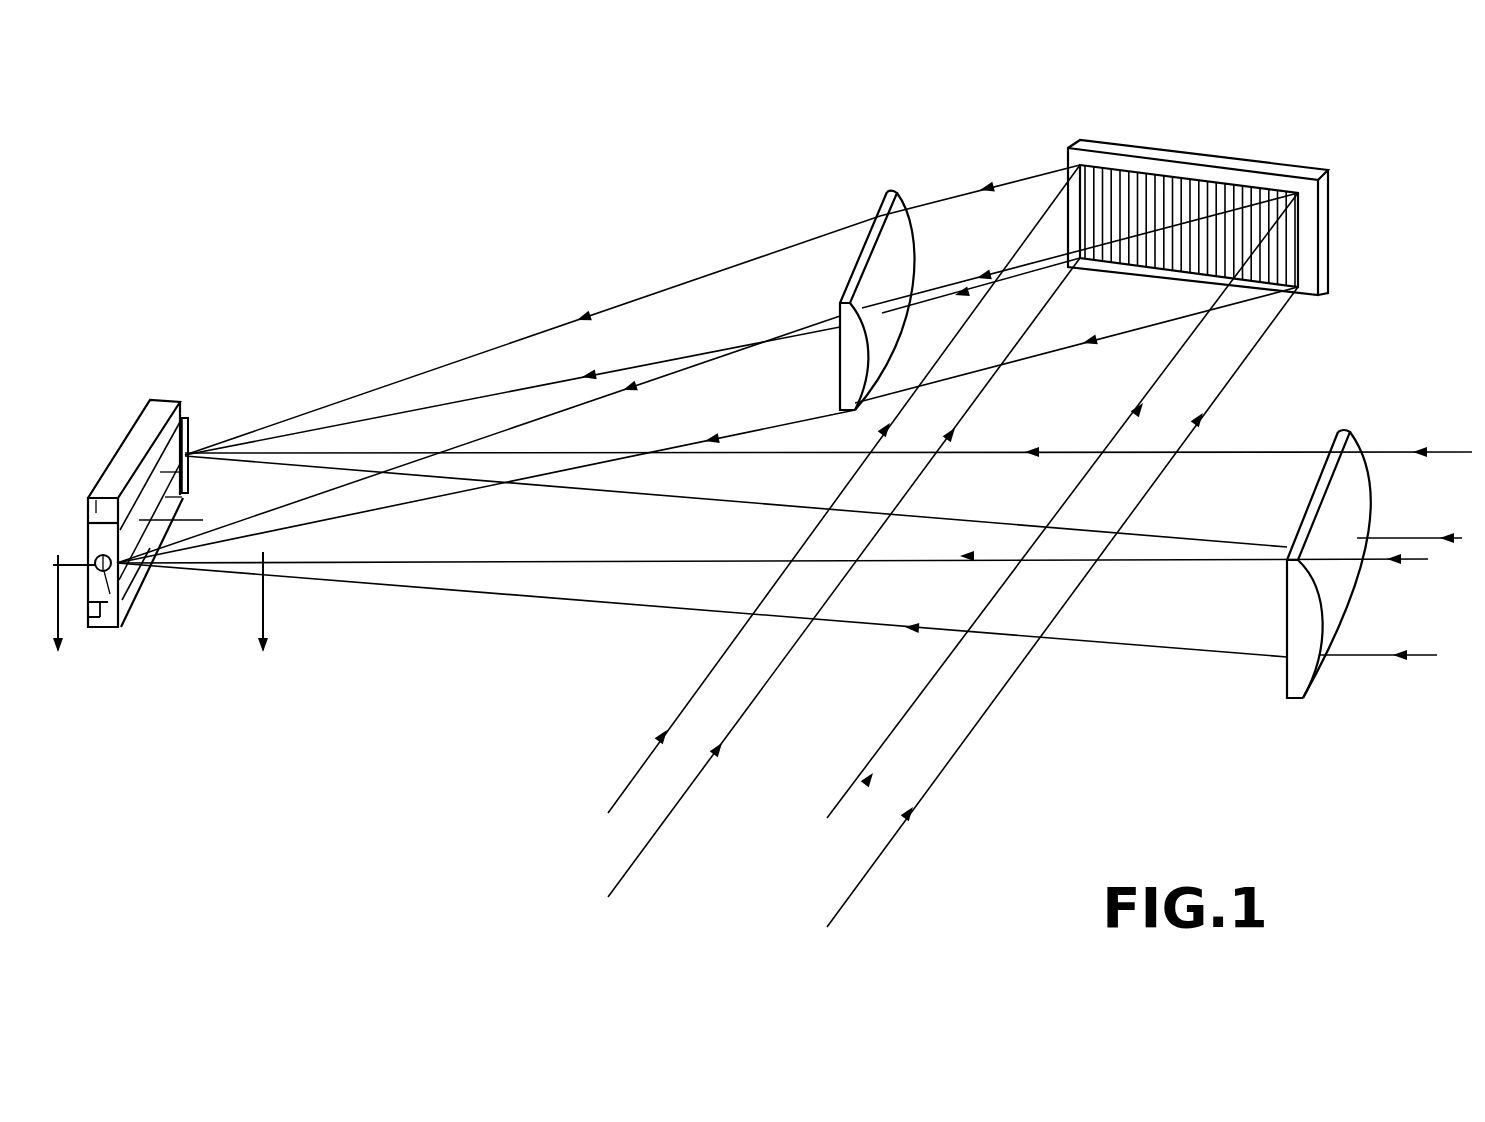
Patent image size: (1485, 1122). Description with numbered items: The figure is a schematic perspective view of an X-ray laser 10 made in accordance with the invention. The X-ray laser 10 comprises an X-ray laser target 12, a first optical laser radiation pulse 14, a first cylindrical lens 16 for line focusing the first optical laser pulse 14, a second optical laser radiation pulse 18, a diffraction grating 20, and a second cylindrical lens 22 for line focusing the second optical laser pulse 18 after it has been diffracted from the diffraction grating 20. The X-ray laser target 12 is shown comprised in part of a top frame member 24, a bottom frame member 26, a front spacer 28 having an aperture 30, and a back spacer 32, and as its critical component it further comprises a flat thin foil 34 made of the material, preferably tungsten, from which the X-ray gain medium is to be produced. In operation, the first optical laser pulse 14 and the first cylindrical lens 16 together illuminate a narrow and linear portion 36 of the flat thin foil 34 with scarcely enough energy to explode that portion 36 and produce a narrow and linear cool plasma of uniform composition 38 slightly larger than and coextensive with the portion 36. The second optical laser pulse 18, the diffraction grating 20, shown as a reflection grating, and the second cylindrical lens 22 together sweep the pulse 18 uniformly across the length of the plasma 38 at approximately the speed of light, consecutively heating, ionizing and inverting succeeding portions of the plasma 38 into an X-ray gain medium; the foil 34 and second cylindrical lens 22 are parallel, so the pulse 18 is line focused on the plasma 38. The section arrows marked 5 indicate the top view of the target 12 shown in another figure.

The X-ray laser 10 is at (425, 738).
The X-ray laser target 12 is at (140, 424).
The first optical laser radiation pulse 14 is at (695, 607).
The first cylindrical lens 16 is at (1345, 428).
The second optical laser radiation pulse 18 is at (938, 286).
The diffraction grating 20 is at (1332, 212).
The second cylindrical lens 22 is at (880, 207).
The top frame member 24 is at (97, 512).
The bottom frame member 26 is at (137, 597).
The front spacer 28 is at (117, 598).
The aperture 30 is at (100, 618).
The back spacer 32 is at (190, 426).
The flat thin foil 34 is at (203, 520).
The narrow and linear portion 36 is at (182, 498).
The narrow and linear cool plasma of uniform composition 38 is at (182, 472).
The section line 5- 5 is at (160, 624).